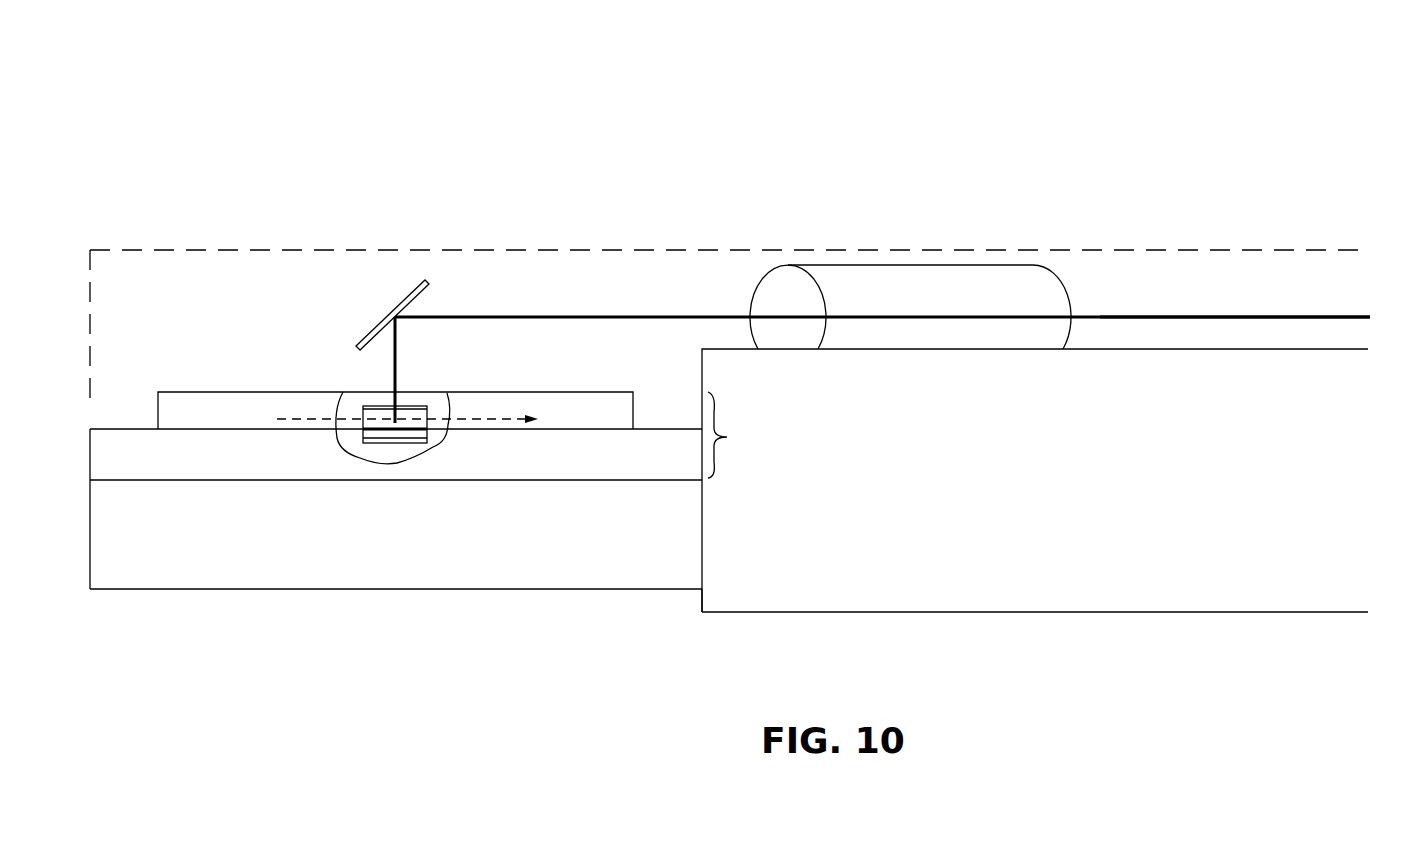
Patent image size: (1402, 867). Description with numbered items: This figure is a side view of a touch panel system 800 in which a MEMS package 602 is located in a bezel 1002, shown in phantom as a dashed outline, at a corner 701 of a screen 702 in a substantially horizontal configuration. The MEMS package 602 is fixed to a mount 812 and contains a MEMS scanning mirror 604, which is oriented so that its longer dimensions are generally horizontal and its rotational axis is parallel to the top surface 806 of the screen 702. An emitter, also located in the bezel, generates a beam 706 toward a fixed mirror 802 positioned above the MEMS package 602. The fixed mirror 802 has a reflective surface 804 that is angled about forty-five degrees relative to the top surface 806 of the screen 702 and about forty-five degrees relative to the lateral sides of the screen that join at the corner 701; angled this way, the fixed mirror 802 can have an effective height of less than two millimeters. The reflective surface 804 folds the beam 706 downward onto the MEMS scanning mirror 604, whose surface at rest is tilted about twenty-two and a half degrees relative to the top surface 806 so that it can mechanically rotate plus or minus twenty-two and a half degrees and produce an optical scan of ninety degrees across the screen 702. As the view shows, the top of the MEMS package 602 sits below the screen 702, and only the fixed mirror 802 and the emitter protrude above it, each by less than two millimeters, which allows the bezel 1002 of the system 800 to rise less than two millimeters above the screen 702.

The touch panel system 800 is at (210, 100).
The bezel 1002 is at (312, 249).
The mount 812 is at (403, 565).
The MEMS package 602 is at (197, 405).
The MEMS scanning mirror 604 is at (365, 416).
The fixed mirror 802 is at (424, 283).
The reflective surface 804 is at (428, 294).
The beam 706 is at (934, 263).
The top surface 806 is at (1266, 349).
The screen 702 is at (1110, 580).
The corner 701 is at (700, 604).